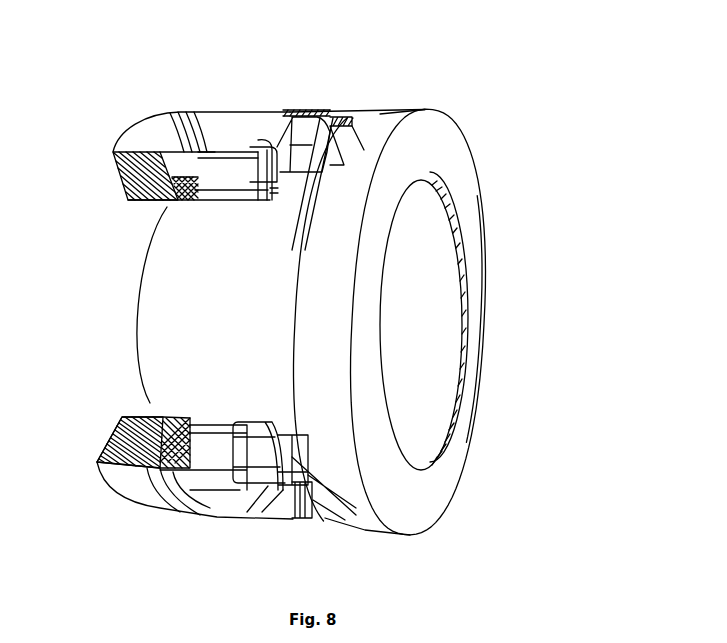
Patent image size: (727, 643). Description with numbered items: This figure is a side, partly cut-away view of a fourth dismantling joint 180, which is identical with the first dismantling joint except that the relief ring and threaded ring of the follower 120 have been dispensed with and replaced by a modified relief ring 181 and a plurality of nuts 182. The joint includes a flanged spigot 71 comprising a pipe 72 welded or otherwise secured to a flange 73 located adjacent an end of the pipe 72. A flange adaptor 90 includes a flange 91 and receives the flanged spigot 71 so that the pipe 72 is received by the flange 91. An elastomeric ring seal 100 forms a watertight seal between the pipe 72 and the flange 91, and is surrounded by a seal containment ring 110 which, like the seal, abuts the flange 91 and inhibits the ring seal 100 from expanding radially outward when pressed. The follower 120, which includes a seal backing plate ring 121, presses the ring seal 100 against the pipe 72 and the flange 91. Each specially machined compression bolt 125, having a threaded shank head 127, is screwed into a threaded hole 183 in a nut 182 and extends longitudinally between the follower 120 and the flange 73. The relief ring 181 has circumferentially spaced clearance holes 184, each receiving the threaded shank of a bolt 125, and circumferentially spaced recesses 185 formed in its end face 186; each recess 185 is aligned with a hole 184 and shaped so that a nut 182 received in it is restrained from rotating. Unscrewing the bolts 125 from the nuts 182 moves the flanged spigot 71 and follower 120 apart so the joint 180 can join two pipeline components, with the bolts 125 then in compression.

The flanged spigot 71 is at (448, 112).
The pipe 72 is at (271, 319).
The flange 73 is at (395, 321).
The flange adaptor 90 is at (137, 146).
The flange 91 is at (130, 442).
The elastomeric ring seal 100 is at (180, 200).
The seal containment ring 110 is at (188, 112).
The follower 120 is at (246, 106).
The seal backing plate ring 121 is at (197, 207).
The compression bolt 125 is at (346, 117).
The threaded shank head 127 is at (353, 120).
The dismantling joint 180 is at (495, 181).
The relief ring 181 is at (217, 490).
The nut 182 is at (323, 115).
The threaded hole 183 is at (268, 420).
The clearance hole 184 is at (235, 188).
The recess 185 is at (279, 118).
The end face 186 is at (300, 211).